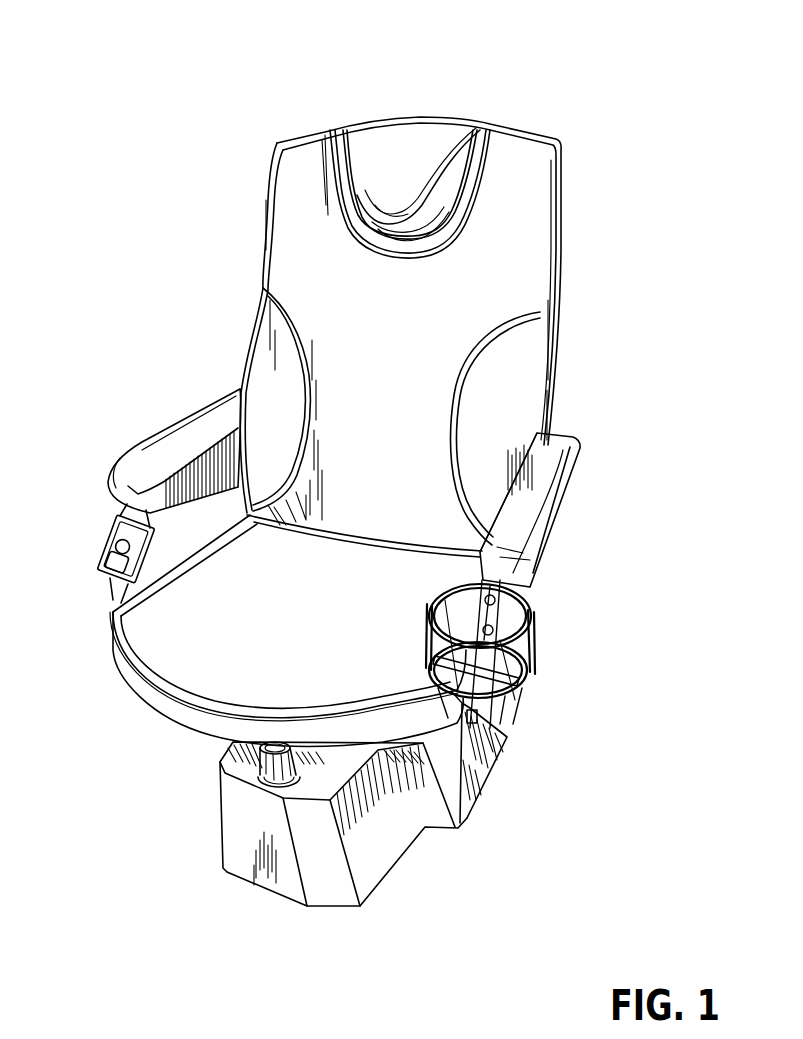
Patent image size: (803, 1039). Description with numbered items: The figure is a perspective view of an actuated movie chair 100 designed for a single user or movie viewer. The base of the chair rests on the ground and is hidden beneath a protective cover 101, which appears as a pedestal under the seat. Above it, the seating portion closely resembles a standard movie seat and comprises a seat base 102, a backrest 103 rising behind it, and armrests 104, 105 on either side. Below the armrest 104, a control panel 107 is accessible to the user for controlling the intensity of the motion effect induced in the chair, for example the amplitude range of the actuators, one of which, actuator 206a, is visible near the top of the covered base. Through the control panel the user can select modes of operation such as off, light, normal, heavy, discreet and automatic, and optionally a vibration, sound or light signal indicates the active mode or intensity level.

The actuated movie chair 100 is at (172, 66).
The protective cover 101 is at (380, 847).
The seat base 102 is at (347, 637).
The backrest 103 is at (419, 406).
The armrest 104 is at (152, 448).
The armrest 105 is at (533, 486).
The control panel 107 is at (98, 558).
The actuator 206a is at (267, 768).